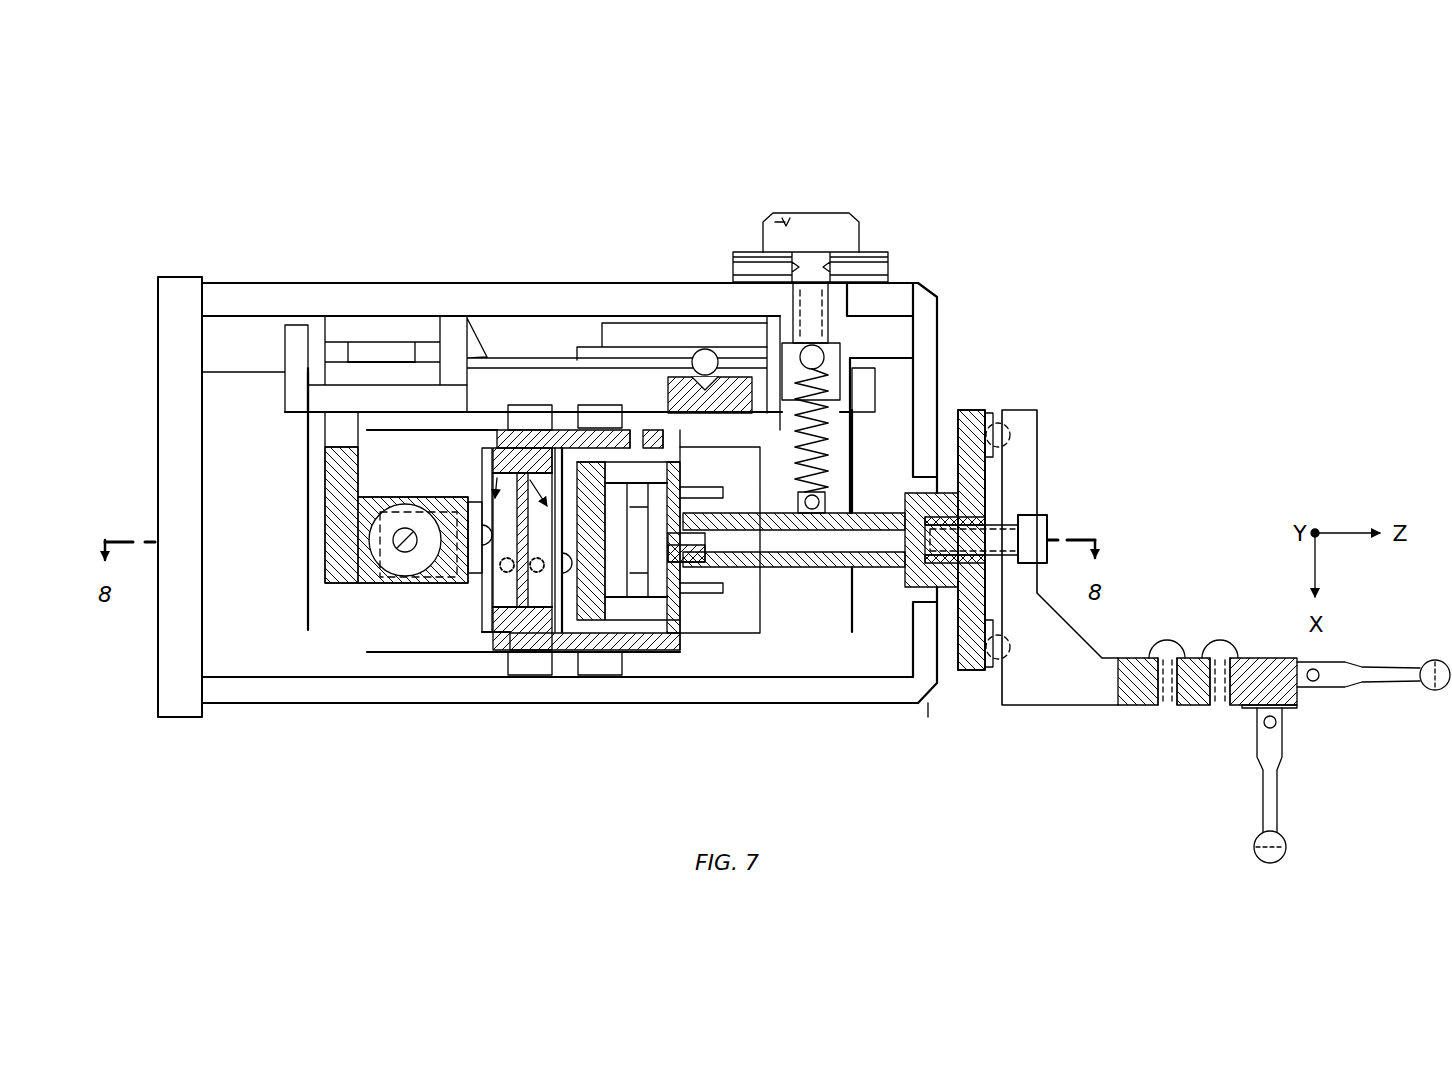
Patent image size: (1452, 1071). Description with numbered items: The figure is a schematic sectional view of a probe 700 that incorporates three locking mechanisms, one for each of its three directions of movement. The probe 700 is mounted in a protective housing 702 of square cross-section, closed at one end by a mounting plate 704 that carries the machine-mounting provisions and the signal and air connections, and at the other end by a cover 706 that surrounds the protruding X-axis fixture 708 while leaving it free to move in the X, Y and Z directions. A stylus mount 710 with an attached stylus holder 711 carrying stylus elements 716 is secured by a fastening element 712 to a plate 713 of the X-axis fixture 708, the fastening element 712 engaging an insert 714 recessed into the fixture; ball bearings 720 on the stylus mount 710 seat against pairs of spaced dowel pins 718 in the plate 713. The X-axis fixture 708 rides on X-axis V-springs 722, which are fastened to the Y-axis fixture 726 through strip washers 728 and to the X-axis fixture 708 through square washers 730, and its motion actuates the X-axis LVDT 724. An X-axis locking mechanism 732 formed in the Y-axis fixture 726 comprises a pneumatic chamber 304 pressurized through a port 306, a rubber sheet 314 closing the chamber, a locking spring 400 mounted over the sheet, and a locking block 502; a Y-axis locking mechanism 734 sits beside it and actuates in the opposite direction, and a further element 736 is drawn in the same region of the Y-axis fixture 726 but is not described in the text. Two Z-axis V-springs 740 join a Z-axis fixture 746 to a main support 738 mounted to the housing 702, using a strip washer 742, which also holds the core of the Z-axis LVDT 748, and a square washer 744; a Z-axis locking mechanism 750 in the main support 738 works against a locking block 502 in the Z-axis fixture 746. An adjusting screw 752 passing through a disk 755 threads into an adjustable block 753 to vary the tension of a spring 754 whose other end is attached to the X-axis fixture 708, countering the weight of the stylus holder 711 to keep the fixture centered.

The probe 700 is at (992, 752).
The protective housing 702 is at (268, 698).
The mounting plate 704 is at (176, 290).
The cover 706 is at (922, 703).
The X-axis fixture 708 is at (877, 568).
The stylus mount 710 is at (1030, 432).
The stylus holder 711 is at (1262, 666).
The fastening element 712 is at (1047, 523).
The plate 713 is at (968, 410).
The insert 714 is at (1002, 520).
The stylus element 716 is at (1405, 670).
The dowel pins 718 is at (990, 672).
The ball bearings 720 is at (1005, 430).
The X-axis V-springs 722 is at (393, 412).
The X-axis LVDT 724 is at (682, 640).
The Y-axis fixture 726 is at (558, 428).
The strip washers 728 is at (530, 412).
The square washers 730 is at (615, 410).
The X-axis locking mechanism 732 is at (548, 440).
The Y-axis locking mechanism 734 is at (497, 507).
The dial 736 is at (393, 520).
The main support 738 is at (488, 340).
The Z-axis V-springs 740 is at (306, 479).
The strip washer 742 is at (286, 345).
The square washer 744 is at (865, 414).
The Z-axis fixture 746 is at (340, 578).
The Z-axis LVDT 748 is at (340, 320).
The Z-axis locking mechanism 750 is at (700, 330).
The adjusting screw 752 is at (812, 252).
The adjustable block 753 is at (838, 366).
The spring 754 is at (830, 476).
The disk 755 is at (748, 282).
The pneumatic chamber 304 is at (525, 607).
The port 306 is at (533, 573).
The rubber sheet 314 is at (530, 480).
The locking spring 400 is at (482, 462).
The locking block 502 is at (720, 403).